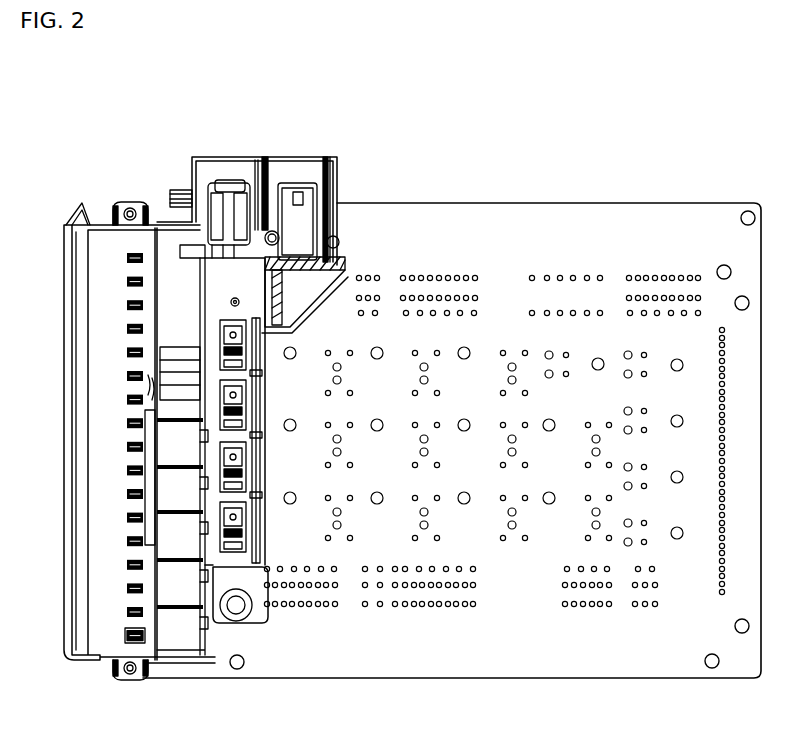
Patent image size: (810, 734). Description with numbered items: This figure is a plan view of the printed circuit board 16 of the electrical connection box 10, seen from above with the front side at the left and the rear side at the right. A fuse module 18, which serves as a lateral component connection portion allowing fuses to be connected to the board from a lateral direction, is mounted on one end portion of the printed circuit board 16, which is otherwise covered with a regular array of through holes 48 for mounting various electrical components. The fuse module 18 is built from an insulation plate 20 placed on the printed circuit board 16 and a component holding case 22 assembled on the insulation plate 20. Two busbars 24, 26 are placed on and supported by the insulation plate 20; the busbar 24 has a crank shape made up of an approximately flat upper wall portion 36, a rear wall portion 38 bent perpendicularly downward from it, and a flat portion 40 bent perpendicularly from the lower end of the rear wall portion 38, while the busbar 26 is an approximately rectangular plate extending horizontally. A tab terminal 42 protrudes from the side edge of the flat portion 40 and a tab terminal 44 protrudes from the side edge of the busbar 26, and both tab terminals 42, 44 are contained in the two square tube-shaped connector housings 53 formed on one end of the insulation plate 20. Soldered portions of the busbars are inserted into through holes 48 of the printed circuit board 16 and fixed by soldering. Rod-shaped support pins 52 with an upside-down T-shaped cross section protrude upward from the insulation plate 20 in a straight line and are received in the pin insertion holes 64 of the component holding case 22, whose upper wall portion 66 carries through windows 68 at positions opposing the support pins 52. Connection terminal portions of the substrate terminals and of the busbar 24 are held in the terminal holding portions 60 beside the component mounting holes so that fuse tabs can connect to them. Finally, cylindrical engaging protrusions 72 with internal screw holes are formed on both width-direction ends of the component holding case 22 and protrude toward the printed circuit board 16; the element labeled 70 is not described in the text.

The electrical connection box 10 is at (433, 50).
The printed circuit board 16 is at (644, 172).
The fuse module 18 is at (186, 88).
The insulation plate 20 is at (289, 103).
The component holding case 22 is at (105, 150).
The busbar 24 is at (175, 290).
The upper wall portion 36 is at (181, 198).
The busbar 26 is at (302, 248).
The rear wall portion 38 is at (198, 310).
The flat portion 40 is at (257, 288).
The tab terminal 42 is at (228, 213).
The tab terminal 44 is at (300, 215).
The through holes 48 is at (474, 278).
The support pins 52 is at (128, 258).
The connector housings 53 is at (238, 168).
The terminal holding portions 60 is at (228, 463).
The pin insertion holes 64 is at (133, 627).
The through windows 68 is at (135, 635).
The upper wall portion 66 is at (103, 318).
The rib 70 is at (145, 402).
The engaging protrusions 72 is at (120, 207).